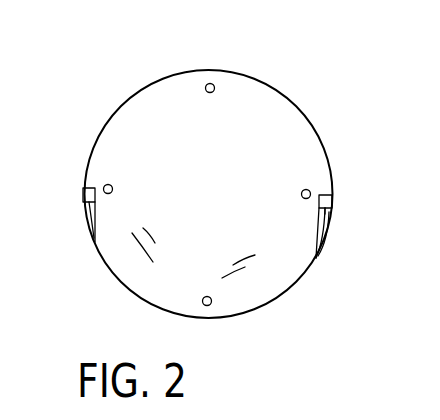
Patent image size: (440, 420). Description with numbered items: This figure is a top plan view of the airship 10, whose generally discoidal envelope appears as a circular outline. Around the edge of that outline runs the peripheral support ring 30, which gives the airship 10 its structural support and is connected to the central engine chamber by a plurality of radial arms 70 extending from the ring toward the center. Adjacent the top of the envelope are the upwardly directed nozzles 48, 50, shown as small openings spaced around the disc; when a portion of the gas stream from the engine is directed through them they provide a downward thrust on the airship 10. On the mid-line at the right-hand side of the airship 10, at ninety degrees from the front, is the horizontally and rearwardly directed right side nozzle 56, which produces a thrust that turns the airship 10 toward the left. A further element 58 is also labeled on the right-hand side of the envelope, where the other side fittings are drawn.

The airship 10 is at (92, 88).
The peripheral support ring 30 is at (326, 231).
The upwardly directed nozzles 48 is at (102, 184).
The upwardly directed nozzle 50 is at (210, 83).
The right side nozzle 56 is at (333, 200).
The left clip 58 is at (83, 193).
The radial arms 70 is at (270, 142).